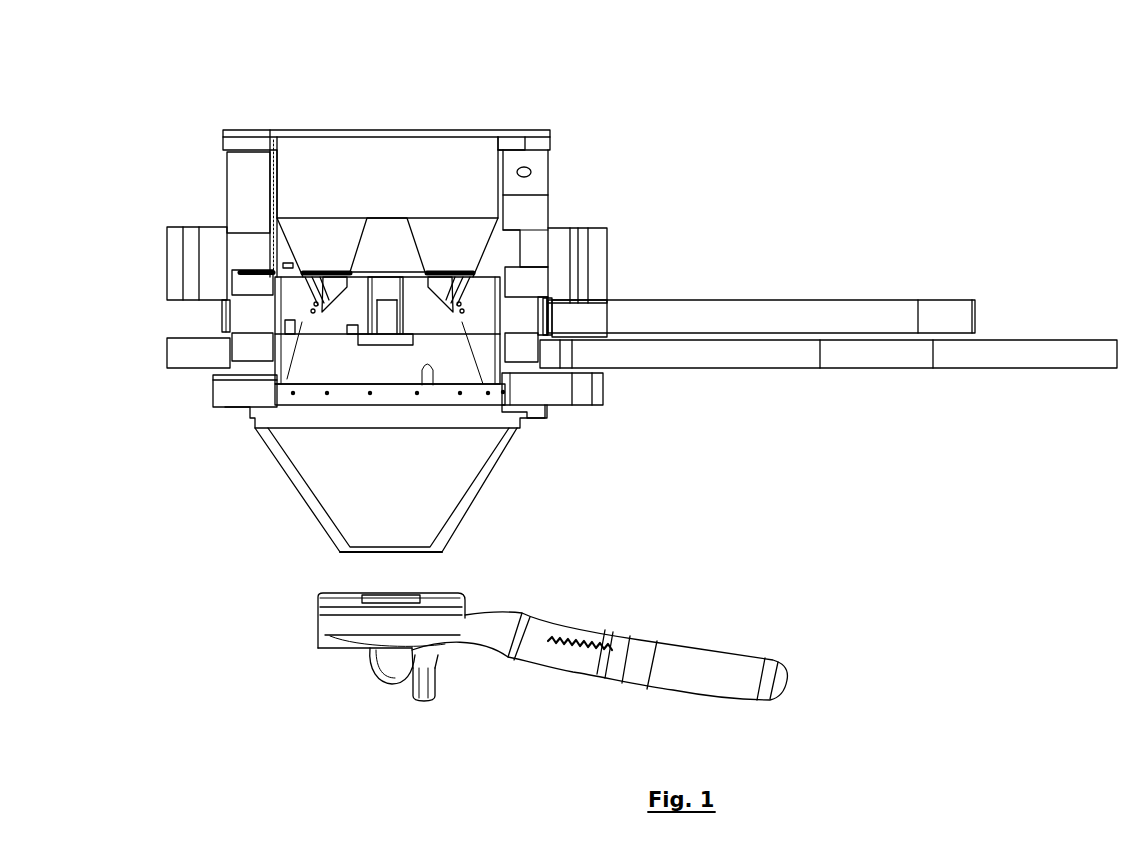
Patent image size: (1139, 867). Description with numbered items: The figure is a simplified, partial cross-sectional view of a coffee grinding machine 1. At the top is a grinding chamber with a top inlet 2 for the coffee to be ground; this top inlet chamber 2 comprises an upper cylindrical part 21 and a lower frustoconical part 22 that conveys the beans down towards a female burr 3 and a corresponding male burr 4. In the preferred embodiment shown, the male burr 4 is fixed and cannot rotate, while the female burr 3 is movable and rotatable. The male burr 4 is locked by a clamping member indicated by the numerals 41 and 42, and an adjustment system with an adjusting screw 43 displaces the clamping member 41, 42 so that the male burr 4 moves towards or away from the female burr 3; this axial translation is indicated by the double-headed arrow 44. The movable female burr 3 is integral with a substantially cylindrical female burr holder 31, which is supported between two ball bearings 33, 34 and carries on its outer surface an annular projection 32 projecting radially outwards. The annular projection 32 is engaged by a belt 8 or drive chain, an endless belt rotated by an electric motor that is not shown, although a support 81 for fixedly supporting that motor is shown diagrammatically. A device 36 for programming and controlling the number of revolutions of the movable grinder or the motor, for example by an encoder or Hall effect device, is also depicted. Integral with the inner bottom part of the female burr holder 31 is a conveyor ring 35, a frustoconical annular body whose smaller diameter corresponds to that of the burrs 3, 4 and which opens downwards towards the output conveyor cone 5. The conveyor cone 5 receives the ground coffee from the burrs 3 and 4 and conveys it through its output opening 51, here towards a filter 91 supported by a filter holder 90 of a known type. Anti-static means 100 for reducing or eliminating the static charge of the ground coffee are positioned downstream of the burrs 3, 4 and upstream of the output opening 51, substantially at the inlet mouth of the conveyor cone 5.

The machine 1 is at (840, 220).
The top inlet 2 is at (425, 167).
The upper cylindrical part 21 is at (277, 167).
The lower frustoconical part 22 is at (288, 253).
The female burr 3 is at (297, 293).
The male burr 4 is at (333, 330).
The output conveyor cone 5 is at (377, 490).
The belt 8 is at (958, 300).
The female burr holder 31 is at (252, 322).
The annular projection 32 is at (545, 312).
The ball bearing 33 is at (535, 279).
The ball bearing 34 is at (540, 352).
The conveyor ring 35 is at (298, 392).
The device for programming and controlling the number of revolutions 36 is at (580, 328).
The clamping member 41 is at (402, 259).
The clamping member 42 is at (400, 345).
The adjusting screw 43 is at (532, 173).
The double-headed arrow 44 is at (392, 154).
The output opening 51 is at (350, 554).
The support 81 is at (888, 368).
The filter holder 90 is at (312, 658).
The filter 91 is at (333, 605).
The anti-static means 100 is at (497, 410).